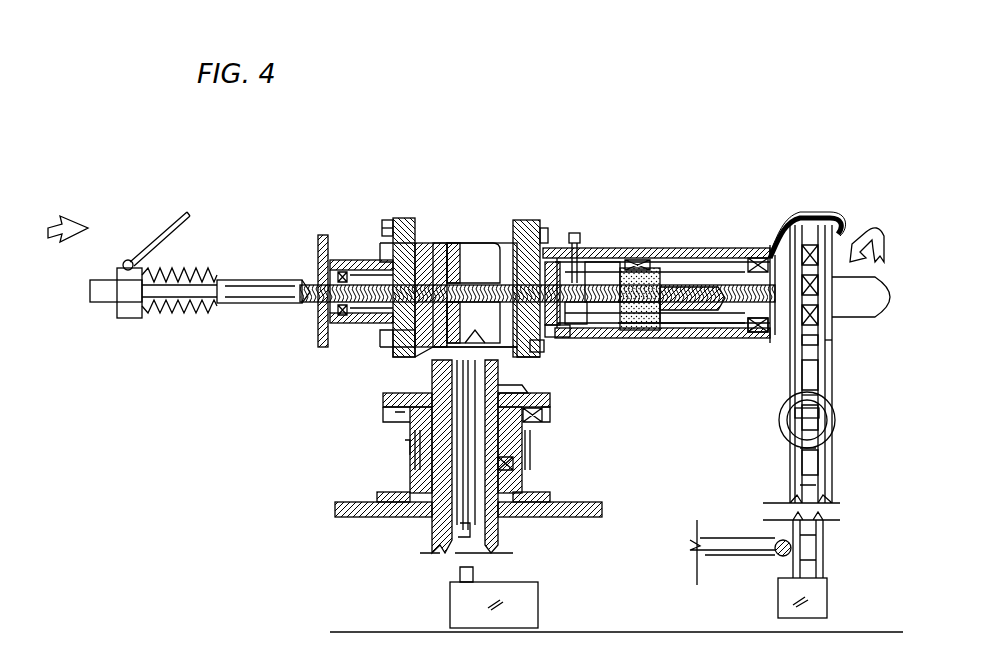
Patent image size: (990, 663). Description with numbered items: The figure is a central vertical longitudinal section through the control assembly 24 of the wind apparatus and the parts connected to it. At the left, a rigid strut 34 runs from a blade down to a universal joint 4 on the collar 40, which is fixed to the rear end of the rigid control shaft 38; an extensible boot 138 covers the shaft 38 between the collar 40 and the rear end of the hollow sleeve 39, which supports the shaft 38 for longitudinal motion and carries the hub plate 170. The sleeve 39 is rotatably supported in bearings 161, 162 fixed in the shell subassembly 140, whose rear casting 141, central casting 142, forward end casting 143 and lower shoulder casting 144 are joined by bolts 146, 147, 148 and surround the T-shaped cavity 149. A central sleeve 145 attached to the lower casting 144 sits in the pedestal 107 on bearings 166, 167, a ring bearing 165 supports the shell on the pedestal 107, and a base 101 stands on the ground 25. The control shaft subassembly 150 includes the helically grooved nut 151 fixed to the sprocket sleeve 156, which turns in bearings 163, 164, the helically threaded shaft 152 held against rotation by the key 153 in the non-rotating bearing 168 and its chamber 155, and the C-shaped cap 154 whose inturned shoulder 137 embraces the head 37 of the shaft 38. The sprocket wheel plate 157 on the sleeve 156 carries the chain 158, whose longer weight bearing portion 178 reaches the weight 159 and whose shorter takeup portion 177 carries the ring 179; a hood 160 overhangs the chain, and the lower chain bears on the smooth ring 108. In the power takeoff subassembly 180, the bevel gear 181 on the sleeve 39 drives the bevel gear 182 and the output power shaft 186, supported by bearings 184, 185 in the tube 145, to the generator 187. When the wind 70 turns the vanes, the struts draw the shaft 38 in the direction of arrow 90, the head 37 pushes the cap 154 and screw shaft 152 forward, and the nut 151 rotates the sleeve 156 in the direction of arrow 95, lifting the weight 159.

The pivot pin 4 is at (124, 260).
The control assembly 24 is at (842, 137).
The ground 25 is at (625, 630).
The strut 34 is at (163, 232).
The head 37 is at (558, 340).
The shaft 38 is at (305, 283).
The sleeve 39 is at (300, 306).
The collar 40 is at (131, 320).
The wind 70 is at (914, 300).
The arrow 90 is at (60, 224).
The arrow 95 is at (878, 232).
The base plate 101 is at (598, 510).
The pedestal 107 is at (418, 480).
The ring 108 is at (727, 543).
The inturned shoulder 137 is at (536, 352).
The spring 138 is at (186, 306).
The shell subassembly 140 is at (488, 180).
The rear casting 141 is at (353, 262).
The central casting 142 is at (457, 242).
The forward end casting 143 is at (700, 335).
The lower shoulder casting 144 is at (552, 403).
The central sleeve 145 is at (418, 450).
The bolt 146 is at (389, 220).
The bolt 147 is at (394, 345).
The bolt 148 is at (450, 358).
The shell assembly cavity 149 is at (421, 278).
The control shaft subassembly 150 is at (778, 207).
The helically grooved nut 151 is at (630, 262).
The helically threaded shaft 152 is at (668, 288).
The key 153 is at (577, 236).
The cap 154 is at (550, 265).
The chamber 155 is at (604, 282).
The sprocket sleeve 156 is at (755, 262).
The sprocket wheel plate 157 is at (825, 346).
The chain 158 is at (803, 228).
The weight 159 is at (812, 594).
The hood 160 is at (832, 214).
The bearing 161 is at (342, 330).
The bearing 162 is at (508, 225).
The bearing 163 is at (650, 328).
The bearing 164 is at (760, 334).
The ring bearing 165 is at (545, 415).
The bearing 166 is at (523, 430).
The bearing 167 is at (515, 463).
The bearing 168 is at (585, 316).
The plate 170 is at (318, 258).
The takeup portion 177 is at (823, 374).
The weight bearing portion 178 is at (824, 467).
The ring 179 is at (836, 419).
The power takeoff subassembly 180 is at (485, 242).
The bevel gear 181 is at (473, 263).
The bevel gear 182 is at (473, 322).
The bearing 184 is at (420, 376).
The bearing 185 is at (520, 392).
The output power shaft 186 is at (460, 527).
The generator 187 is at (520, 584).